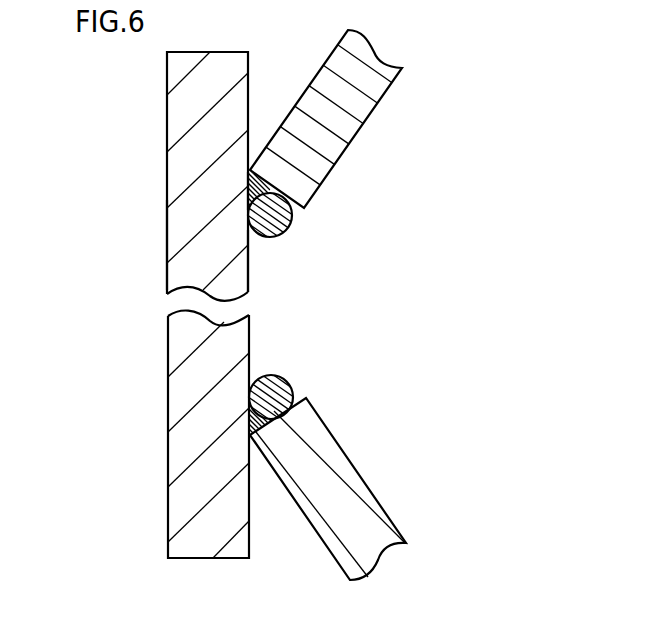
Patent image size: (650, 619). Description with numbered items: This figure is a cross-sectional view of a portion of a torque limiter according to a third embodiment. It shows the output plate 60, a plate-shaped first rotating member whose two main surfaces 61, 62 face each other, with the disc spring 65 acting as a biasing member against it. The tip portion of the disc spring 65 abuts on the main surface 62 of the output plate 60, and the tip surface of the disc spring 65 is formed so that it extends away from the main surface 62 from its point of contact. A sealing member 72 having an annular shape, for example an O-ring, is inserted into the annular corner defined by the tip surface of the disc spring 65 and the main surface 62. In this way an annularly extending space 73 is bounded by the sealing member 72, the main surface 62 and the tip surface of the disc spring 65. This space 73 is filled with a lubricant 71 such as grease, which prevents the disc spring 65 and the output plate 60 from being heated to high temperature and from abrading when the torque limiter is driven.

The output plate 60 is at (197, 287).
The main surface 61 is at (167, 243).
The main surface 62 is at (248, 262).
The disc spring 65 is at (367, 88).
The lubricant 71 is at (262, 188).
The sealing member 72 is at (280, 218).
The space 73 is at (247, 190).